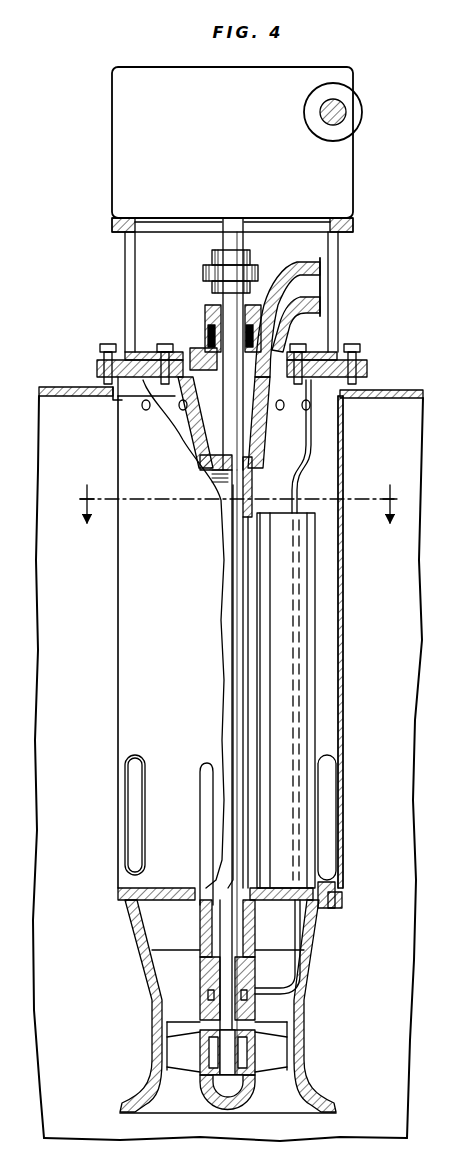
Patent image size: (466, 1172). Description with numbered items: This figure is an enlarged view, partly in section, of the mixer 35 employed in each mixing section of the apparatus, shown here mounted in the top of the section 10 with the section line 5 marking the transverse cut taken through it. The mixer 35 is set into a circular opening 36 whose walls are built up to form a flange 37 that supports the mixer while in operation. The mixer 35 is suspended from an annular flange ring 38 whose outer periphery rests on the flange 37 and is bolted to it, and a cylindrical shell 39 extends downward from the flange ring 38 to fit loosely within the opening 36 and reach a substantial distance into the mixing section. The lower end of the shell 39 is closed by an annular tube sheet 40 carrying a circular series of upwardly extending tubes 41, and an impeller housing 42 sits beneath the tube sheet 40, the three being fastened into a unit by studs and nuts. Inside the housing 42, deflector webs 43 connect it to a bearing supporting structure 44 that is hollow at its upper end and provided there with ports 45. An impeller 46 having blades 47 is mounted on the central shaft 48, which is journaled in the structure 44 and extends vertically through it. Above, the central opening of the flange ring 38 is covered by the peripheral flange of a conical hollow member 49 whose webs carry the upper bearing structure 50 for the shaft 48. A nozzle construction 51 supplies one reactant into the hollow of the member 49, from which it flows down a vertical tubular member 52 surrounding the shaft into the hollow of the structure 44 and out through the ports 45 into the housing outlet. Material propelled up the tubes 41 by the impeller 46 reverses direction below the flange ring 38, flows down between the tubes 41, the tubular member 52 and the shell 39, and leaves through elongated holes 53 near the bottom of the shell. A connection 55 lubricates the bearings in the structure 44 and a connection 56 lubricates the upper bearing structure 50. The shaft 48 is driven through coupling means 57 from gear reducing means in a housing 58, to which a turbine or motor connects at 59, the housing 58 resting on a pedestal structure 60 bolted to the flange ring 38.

The section line 5- 5 is at (238, 494).
The tank 10 is at (393, 390).
The mixer 35 is at (116, 597).
The circular opening 36 is at (110, 398).
The flange 37 is at (98, 372).
The annular flange ring 38 is at (368, 368).
The cylindrical shell 39 is at (187, 610).
The annular tube sheet 40 is at (340, 897).
The tubes 41 is at (307, 647).
The impeller housing 42 is at (140, 937).
The deflector webs 43 is at (185, 986).
The bearing supporting structure 44 is at (258, 950).
The ports 45 is at (263, 938).
The impeller 46 is at (262, 1080).
The blades 47 is at (277, 1055).
The central shaft 48 is at (222, 300).
The hollow member 49 is at (265, 432).
The bearing structure 50 is at (212, 412).
The nozzle construction 51 is at (300, 253).
The vertical tubular member 52 is at (252, 498).
The elongated holes 53 is at (199, 806).
The lubrication connection 55 is at (313, 448).
The lubrication connection 56 is at (206, 340).
The coupling means 57 is at (205, 270).
The housing 58 is at (357, 180).
The connection to gear reducing means 59 is at (360, 104).
The pedestal structure 60 is at (355, 226).